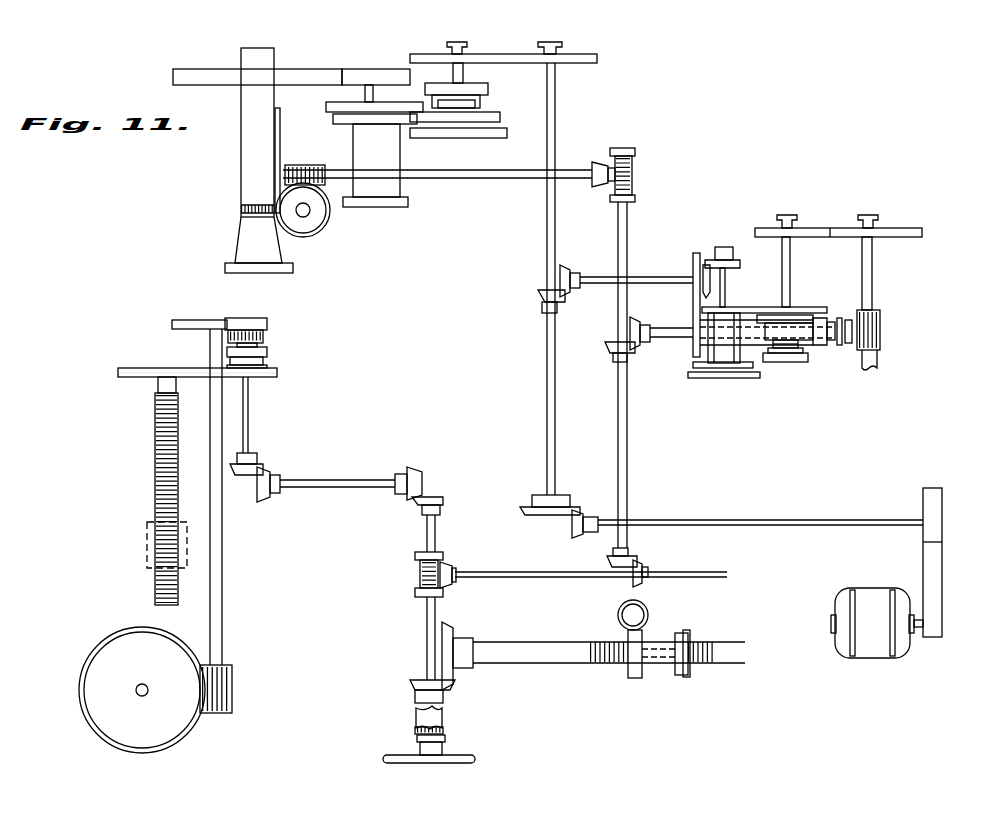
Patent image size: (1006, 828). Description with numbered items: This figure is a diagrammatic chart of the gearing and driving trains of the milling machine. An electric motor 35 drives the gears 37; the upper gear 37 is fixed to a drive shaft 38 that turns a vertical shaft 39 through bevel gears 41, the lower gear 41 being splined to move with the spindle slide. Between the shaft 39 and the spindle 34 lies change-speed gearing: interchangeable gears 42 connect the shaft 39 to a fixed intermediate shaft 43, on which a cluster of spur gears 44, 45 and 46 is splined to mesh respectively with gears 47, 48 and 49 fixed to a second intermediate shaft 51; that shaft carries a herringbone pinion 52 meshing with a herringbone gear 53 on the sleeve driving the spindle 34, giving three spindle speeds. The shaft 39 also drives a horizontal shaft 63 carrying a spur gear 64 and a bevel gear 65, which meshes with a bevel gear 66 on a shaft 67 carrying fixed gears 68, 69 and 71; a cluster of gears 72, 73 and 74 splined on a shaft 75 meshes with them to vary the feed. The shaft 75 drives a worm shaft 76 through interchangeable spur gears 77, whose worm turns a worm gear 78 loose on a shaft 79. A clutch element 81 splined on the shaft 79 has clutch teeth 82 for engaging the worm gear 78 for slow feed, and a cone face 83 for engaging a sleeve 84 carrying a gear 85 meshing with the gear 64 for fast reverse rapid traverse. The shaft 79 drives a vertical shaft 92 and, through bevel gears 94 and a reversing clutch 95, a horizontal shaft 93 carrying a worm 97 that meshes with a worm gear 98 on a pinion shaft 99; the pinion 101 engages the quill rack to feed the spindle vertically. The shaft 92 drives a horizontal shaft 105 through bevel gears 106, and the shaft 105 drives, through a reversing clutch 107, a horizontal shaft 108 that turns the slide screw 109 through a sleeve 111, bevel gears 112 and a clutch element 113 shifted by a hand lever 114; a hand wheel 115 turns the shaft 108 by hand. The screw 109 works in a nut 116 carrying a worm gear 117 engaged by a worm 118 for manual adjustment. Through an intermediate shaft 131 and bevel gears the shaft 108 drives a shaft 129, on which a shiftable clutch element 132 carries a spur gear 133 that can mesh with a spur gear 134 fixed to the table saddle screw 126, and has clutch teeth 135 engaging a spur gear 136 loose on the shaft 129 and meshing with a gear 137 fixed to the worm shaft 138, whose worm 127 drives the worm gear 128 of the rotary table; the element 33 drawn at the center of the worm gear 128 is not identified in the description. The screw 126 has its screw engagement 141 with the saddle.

The shaft hub 33 is at (152, 668).
The spindle 34 is at (241, 232).
The electric motor 35 is at (885, 586).
The driven gears 37 is at (942, 560).
The drive shaft 38 is at (824, 528).
The vertical shaft 39 is at (547, 377).
The bevel gears 41 is at (543, 517).
The interchangeable gears 42 is at (493, 55).
The fixed intermediate shaft 43 is at (463, 72).
The spur gear 44 is at (495, 121).
The slow speed gear 45 is at (488, 91).
The high speed gear 46 is at (507, 134).
The gear 47 is at (333, 122).
The gear 48 is at (328, 108).
The gear 49 is at (409, 202).
The second intermediate shaft 51 is at (373, 92).
The herringbone pinion 52 is at (355, 75).
The herringbone gear 53 is at (292, 77).
The horizontal shaft 63 is at (598, 283).
The spur gear 64 is at (693, 261).
The bevel gear 65 is at (712, 288).
The bevel gear 66 is at (740, 262).
The shaft 67 is at (726, 291).
The fixed gear 68 is at (731, 307).
The fixed gear 69 is at (741, 378).
The fixed gear 71 is at (737, 363).
The cluster gear 72 is at (790, 315).
The cluster gear 73 is at (804, 358).
The cluster gear 74 is at (805, 320).
The shaft 75 is at (791, 254).
The worm shaft 76 is at (873, 259).
The interchangeable spur gears 77 is at (800, 230).
The worm gear 78 is at (876, 358).
The shaft 79 is at (640, 348).
The clutch element 81 is at (824, 346).
The clutch teeth 82 is at (846, 318).
The cone face 83 is at (840, 346).
The sleeve 84 is at (760, 348).
The gear 85 is at (666, 337).
The vertical shaft 92 is at (628, 218).
The horizontal shaft 93 is at (497, 178).
The bevel gears 94 is at (610, 151).
The reversing clutch 95 is at (633, 173).
The worm 97 is at (315, 165).
The worm gear 98 is at (330, 186).
The pinion shaft 99 is at (304, 218).
The pinion 101 is at (331, 222).
The horizontal shaft 105 is at (697, 572).
The bevel gears 106 is at (630, 557).
The reversing clutch 107 is at (418, 575).
The horizontal shaft 108 is at (436, 545).
The screw 109 is at (513, 663).
The sleeve 111 is at (441, 715).
The bevel gears 112 is at (452, 688).
The clutch element 113 is at (446, 742).
The hand lever 114 is at (445, 730).
The hand wheel 115 is at (466, 762).
The nut 116 is at (680, 631).
The worm gear 117 is at (628, 632).
The worm 118 is at (635, 614).
The table saddle screw 126 is at (155, 399).
The worm 127 is at (233, 686).
The worm gear 128 is at (85, 670).
The shaft 129 is at (250, 406).
The intermediate shaft 131 is at (352, 488).
The shiftable clutch element 132 is at (268, 353).
The spur gear 133 is at (278, 372).
The spur gear 134 is at (155, 358).
The clutch teeth 135 is at (265, 340).
The spur gear 136 is at (263, 318).
The gear 137 is at (185, 313).
The worm shaft 138 is at (222, 424).
The screw engagement 141 is at (147, 541).